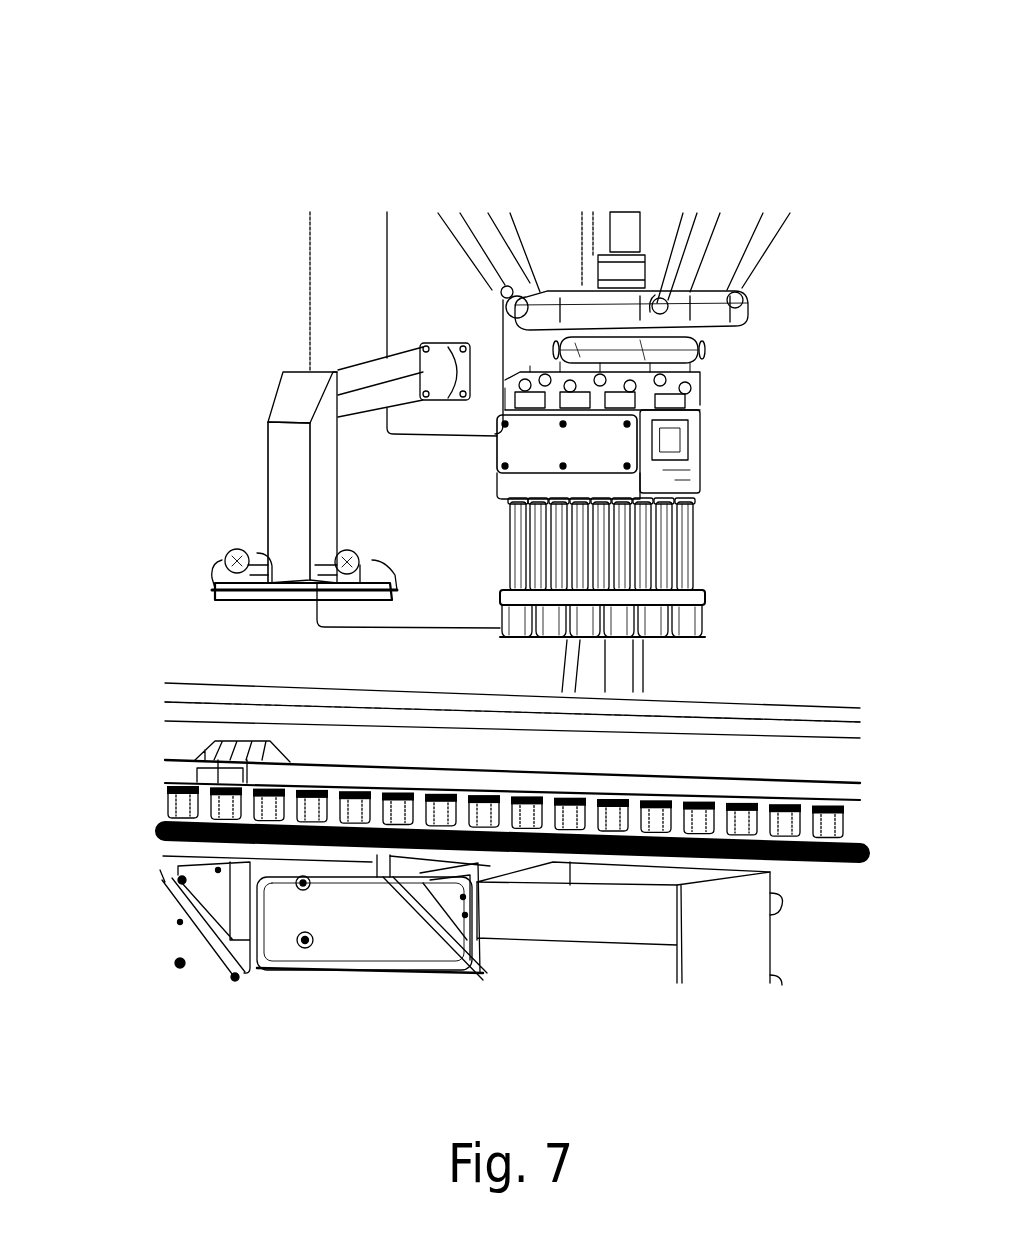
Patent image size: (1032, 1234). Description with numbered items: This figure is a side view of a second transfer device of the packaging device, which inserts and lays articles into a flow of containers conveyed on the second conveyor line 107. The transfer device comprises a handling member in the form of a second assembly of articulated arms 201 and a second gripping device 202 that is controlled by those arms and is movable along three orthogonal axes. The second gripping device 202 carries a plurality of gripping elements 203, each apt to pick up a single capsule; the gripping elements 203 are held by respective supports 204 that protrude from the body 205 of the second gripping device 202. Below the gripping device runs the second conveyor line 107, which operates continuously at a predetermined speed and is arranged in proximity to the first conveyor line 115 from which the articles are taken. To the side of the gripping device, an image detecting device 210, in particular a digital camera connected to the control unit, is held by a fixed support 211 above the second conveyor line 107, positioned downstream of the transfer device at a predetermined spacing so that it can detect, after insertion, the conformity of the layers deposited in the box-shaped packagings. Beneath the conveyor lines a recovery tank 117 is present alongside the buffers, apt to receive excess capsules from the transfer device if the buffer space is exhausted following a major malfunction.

The second assembly of articulated arms 201 is at (447, 230).
The second gripping device 202 is at (701, 484).
The gripping elements 203 is at (703, 617).
The support 204 is at (693, 547).
The body 205 is at (690, 477).
The image detecting device 210 is at (252, 602).
The fixed support 211 is at (287, 512).
The second conveyor line 107 is at (247, 705).
The first conveyor line 115 is at (243, 806).
The recovery tanks 117 is at (610, 932).